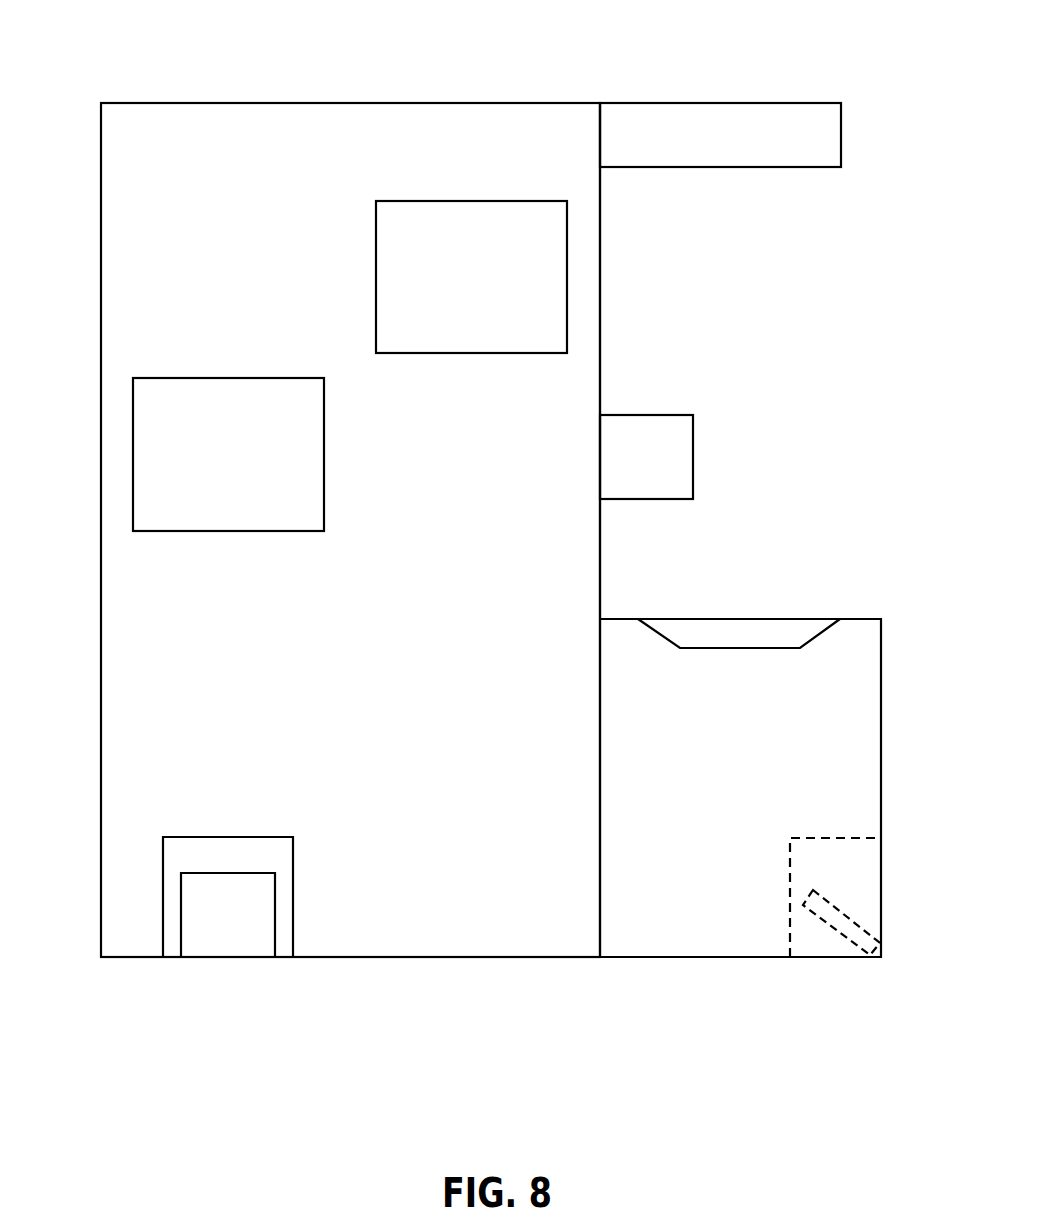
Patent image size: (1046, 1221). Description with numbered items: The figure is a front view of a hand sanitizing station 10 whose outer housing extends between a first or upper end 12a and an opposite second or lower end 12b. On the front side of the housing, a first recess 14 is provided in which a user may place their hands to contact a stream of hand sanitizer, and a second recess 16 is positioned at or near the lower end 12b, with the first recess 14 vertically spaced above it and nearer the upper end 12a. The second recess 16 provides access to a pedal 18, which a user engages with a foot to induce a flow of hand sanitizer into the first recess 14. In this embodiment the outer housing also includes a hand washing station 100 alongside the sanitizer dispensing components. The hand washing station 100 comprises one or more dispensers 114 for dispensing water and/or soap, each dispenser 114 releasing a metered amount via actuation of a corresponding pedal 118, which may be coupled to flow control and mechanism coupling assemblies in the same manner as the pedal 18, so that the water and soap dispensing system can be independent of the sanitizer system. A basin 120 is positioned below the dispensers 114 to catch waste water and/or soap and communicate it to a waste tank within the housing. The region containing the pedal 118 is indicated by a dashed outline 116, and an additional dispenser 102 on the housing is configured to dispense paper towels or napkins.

The hand sanitizing station 10 is at (128, 61).
The upper end 12a is at (316, 96).
The lower end 12b is at (348, 968).
The first recess 14 is at (324, 433).
The second recess 16 is at (293, 858).
The pedal 18 is at (275, 910).
The hand washing station 100 is at (845, 362).
The additional dispenser 102 is at (376, 250).
The dispenser 114 is at (693, 452).
The robot enclosure 116 is at (790, 863).
The pedal 118 is at (850, 912).
The basin 120 is at (744, 650).